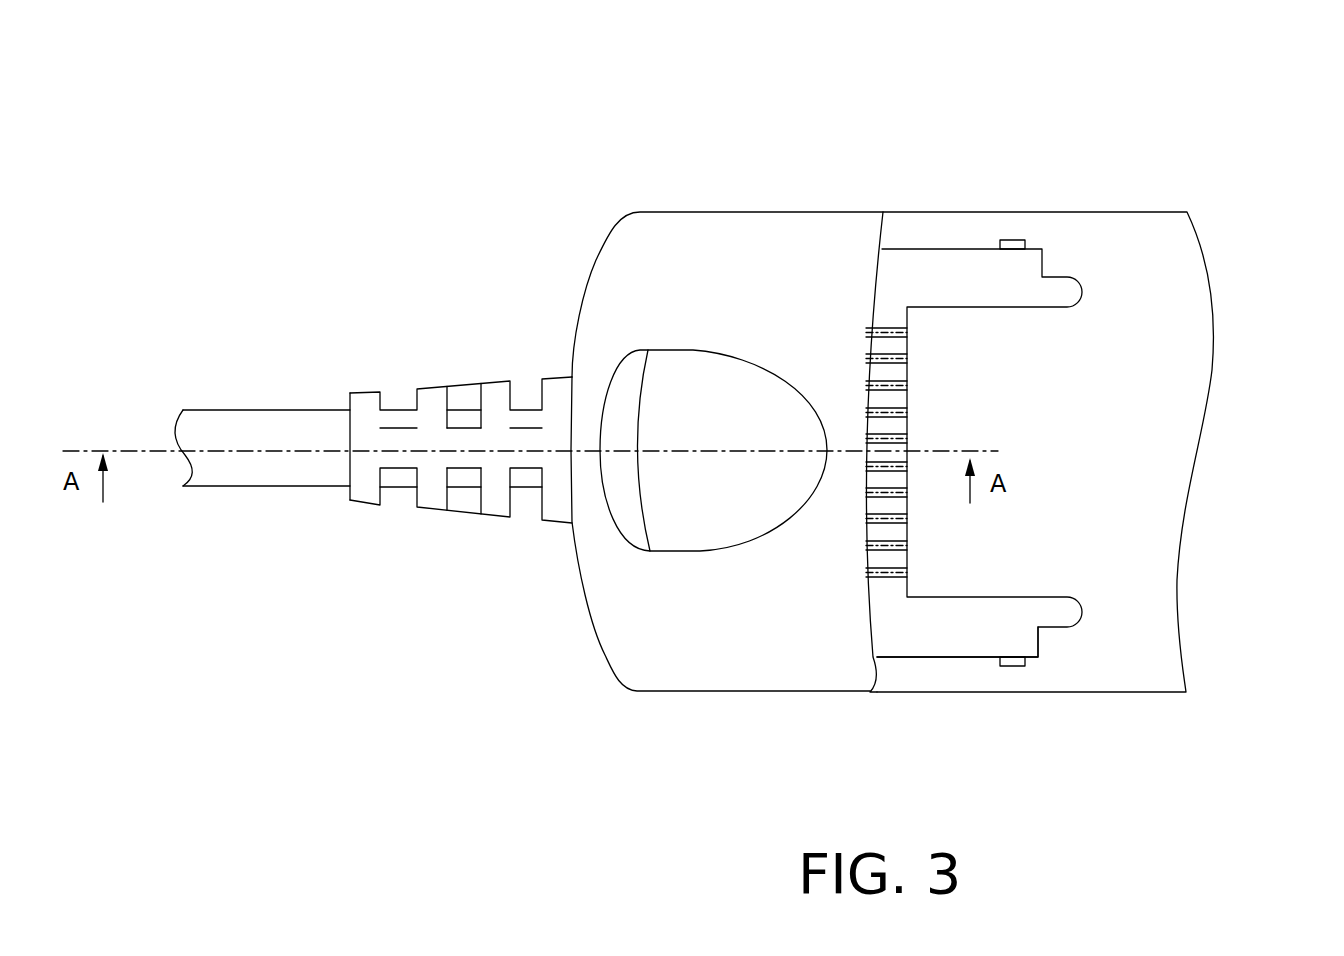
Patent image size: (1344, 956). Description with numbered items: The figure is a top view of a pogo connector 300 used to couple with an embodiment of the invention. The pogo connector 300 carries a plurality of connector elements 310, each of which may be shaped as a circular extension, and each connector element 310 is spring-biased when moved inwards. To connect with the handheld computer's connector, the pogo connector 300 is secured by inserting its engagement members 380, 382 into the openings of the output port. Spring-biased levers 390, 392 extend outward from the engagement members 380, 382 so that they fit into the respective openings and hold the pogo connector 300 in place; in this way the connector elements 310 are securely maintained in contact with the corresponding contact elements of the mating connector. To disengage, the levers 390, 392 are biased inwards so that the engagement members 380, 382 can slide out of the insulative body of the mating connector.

The pogo connector 300 is at (1000, 145).
The connector elements 310 is at (907, 547).
The engagement member 380 is at (1062, 273).
The engagement member 382 is at (967, 635).
The spring-biased lever 390 is at (1017, 240).
The spring-biased lever 392 is at (1003, 665).